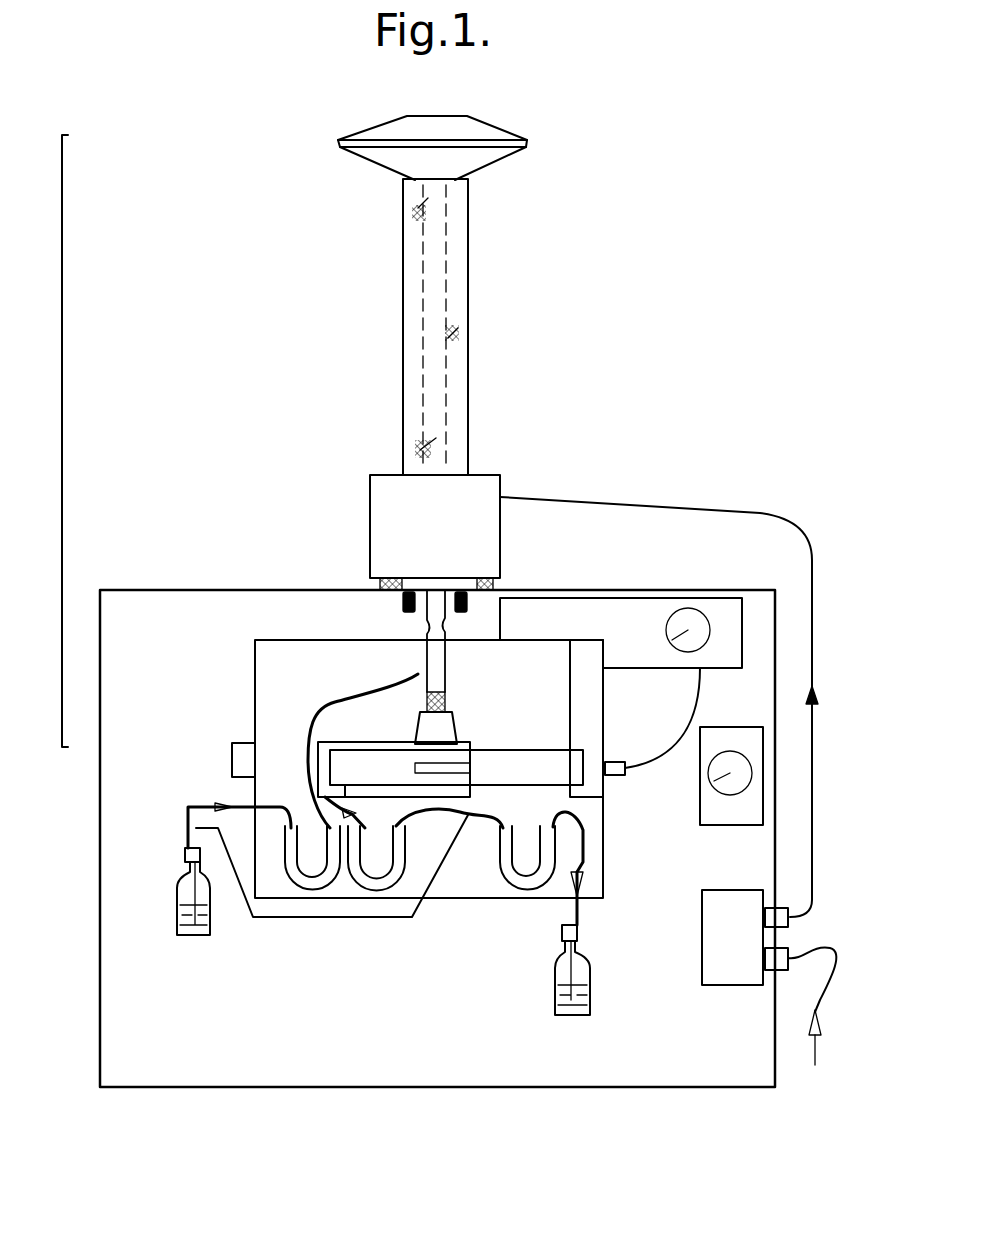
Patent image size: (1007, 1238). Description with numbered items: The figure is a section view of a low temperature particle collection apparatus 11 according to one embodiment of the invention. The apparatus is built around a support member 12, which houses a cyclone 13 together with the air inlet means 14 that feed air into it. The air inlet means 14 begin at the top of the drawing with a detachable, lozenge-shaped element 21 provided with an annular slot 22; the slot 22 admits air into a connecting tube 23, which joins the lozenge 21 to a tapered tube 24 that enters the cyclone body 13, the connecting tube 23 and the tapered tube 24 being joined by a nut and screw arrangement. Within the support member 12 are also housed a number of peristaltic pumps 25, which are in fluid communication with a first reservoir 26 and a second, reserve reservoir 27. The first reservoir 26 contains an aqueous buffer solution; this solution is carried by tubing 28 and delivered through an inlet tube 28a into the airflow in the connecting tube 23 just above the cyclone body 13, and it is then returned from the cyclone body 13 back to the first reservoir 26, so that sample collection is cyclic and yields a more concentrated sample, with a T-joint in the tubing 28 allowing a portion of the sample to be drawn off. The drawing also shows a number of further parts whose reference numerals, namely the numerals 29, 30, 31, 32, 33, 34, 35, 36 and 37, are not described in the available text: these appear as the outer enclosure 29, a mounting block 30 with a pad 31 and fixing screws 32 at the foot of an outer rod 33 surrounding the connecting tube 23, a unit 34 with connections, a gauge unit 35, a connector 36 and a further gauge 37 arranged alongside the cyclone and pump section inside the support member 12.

The low temperature particle collection apparatus 11 is at (427, 130).
The support member 12 is at (262, 675).
The cyclone 13 is at (380, 775).
The air inlet means 14 is at (62, 421).
The lozenge-shaped element 21 is at (488, 132).
The annular slot 22 is at (518, 150).
The connecting tube 23 is at (413, 340).
The tapered tube 24 is at (455, 730).
The peristaltic pumps 25 is at (527, 873).
The first reservoir 26 is at (190, 925).
The second, reserve reservoir 27 is at (573, 1000).
The tubing 28 is at (348, 695).
The inlet tube 28a is at (418, 676).
The enclosure 29 is at (703, 1090).
The rod mount 30 is at (490, 480).
The sealing pad 31 is at (490, 575).
The screws 32 is at (403, 601).
The rod 33 is at (462, 290).
The pump unit 34 is at (733, 975).
The gauge unit 35 is at (717, 614).
The connector 36 is at (622, 777).
The gauge 37 is at (735, 826).